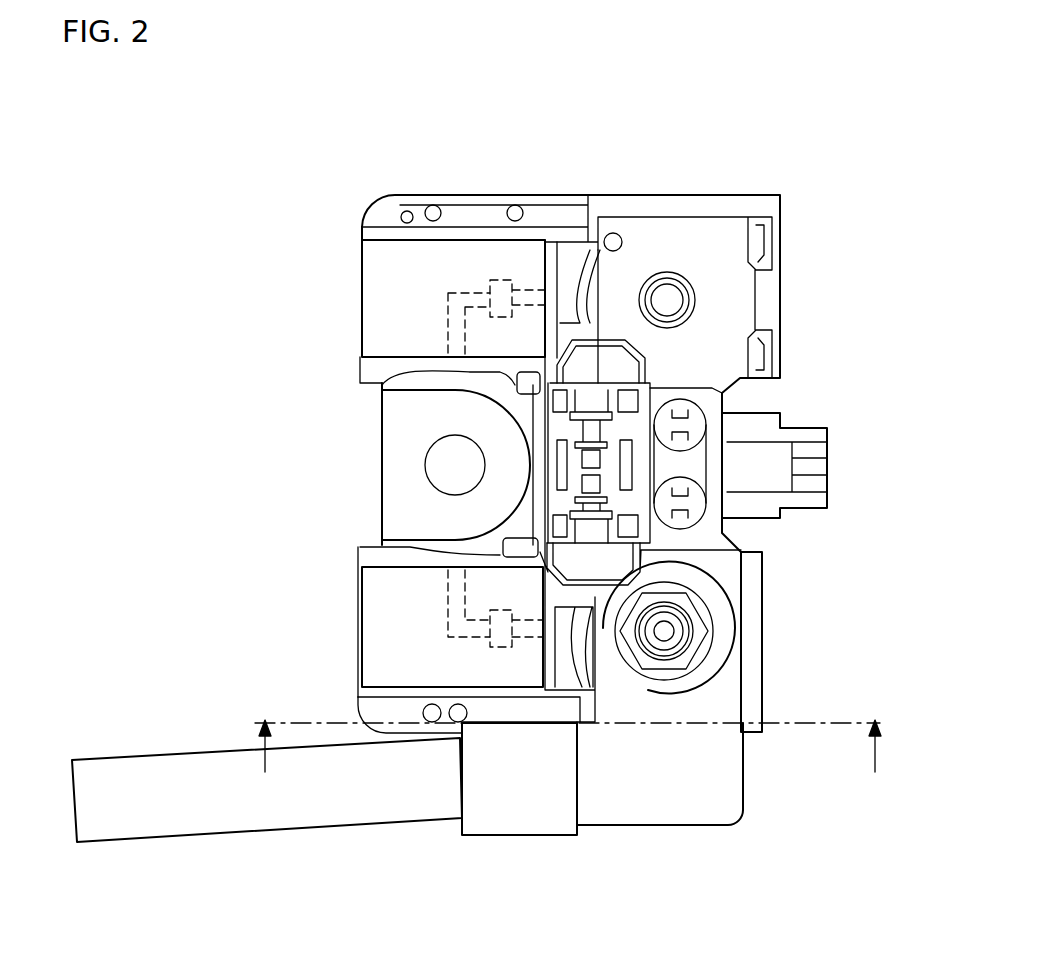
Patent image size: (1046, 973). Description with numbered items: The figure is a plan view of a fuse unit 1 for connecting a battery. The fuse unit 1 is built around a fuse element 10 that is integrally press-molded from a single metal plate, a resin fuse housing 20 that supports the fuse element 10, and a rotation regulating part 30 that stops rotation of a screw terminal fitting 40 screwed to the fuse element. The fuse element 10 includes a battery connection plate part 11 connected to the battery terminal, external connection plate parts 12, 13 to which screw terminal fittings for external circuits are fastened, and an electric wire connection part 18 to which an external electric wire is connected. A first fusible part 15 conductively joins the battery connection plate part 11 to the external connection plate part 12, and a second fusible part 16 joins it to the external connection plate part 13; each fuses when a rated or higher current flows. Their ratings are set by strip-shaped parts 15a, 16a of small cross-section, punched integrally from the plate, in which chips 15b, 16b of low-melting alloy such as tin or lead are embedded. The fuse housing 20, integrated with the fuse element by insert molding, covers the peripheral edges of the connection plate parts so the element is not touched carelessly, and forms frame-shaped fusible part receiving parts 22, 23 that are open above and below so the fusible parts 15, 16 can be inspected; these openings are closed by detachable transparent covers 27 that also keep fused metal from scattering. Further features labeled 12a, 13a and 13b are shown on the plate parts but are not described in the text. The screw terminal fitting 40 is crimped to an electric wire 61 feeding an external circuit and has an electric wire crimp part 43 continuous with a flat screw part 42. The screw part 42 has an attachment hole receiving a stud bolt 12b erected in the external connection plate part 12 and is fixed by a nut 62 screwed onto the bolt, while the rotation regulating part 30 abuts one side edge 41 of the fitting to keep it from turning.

The fuse unit 1 is at (792, 242).
The fuse element 10 is at (395, 425).
The battery connection plate part 11 is at (402, 491).
The external connection plate part 12 is at (892, 527).
The bolt boss 12a is at (730, 580).
The stud bolt 12b is at (662, 632).
The external connection plate part 13 is at (727, 287).
The holder wall 13a is at (727, 317).
The positioning boss 13b is at (667, 297).
The first fusible part 15 is at (262, 578).
The strip-shaped part 15a is at (447, 607).
The chip 15b is at (490, 647).
The second fusible part 16 is at (272, 197).
The strip-shaped part 16a is at (450, 325).
The chip 16b is at (500, 291).
The electric wire connection part 18 is at (817, 413).
The fuse housing 20 is at (672, 198).
The fusible part receiving part 22 is at (365, 567).
The fusible part receiving part 23 is at (368, 348).
The cover 27 is at (520, 262).
The rotation regulating part 30 is at (755, 655).
The screw terminal fitting 40 is at (660, 795).
The side edge 41 is at (740, 697).
The screw part 42 is at (718, 790).
The electric wire crimp part 43 is at (482, 772).
The electric wire 61 is at (178, 808).
The nut 62 is at (677, 669).